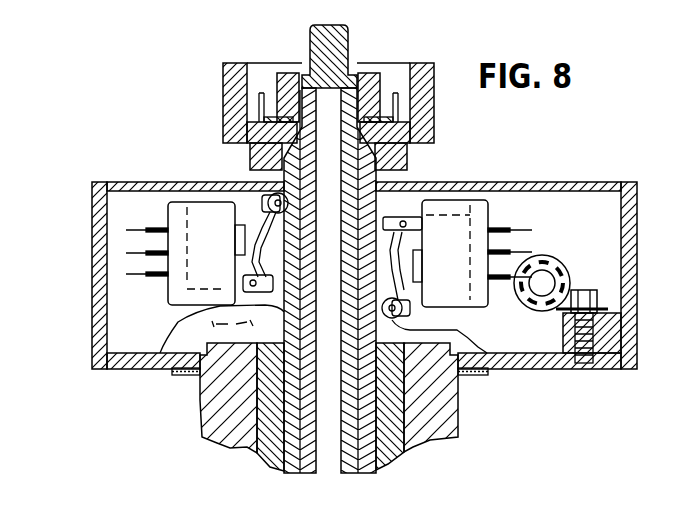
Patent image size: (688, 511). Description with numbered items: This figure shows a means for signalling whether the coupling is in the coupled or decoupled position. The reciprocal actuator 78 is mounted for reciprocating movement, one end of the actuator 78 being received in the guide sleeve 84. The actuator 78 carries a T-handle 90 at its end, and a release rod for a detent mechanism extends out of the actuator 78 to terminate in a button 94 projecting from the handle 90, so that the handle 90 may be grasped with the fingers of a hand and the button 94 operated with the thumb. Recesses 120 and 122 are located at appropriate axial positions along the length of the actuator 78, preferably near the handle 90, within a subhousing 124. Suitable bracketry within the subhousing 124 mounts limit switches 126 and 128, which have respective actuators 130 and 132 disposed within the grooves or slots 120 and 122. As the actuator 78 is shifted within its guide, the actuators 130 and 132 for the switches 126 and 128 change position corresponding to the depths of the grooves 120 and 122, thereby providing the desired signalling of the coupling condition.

The actuator 78 is at (350, 474).
The guide sleeve 84 is at (263, 392).
The T-handle 90 is at (222, 76).
The button 94 is at (310, 33).
The recess 120 is at (172, 340).
The recess 122 is at (407, 437).
The subhousing 124 is at (112, 183).
The limit switch 126 is at (167, 293).
The limit switch 128 is at (474, 192).
The switch actuator 130 is at (262, 200).
The switch actuator 132 is at (473, 340).